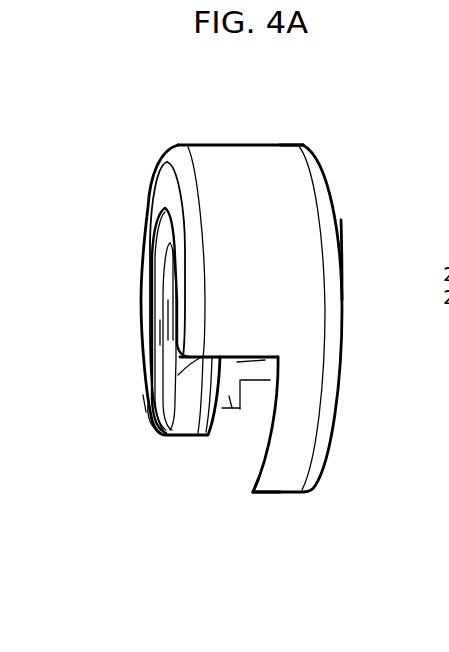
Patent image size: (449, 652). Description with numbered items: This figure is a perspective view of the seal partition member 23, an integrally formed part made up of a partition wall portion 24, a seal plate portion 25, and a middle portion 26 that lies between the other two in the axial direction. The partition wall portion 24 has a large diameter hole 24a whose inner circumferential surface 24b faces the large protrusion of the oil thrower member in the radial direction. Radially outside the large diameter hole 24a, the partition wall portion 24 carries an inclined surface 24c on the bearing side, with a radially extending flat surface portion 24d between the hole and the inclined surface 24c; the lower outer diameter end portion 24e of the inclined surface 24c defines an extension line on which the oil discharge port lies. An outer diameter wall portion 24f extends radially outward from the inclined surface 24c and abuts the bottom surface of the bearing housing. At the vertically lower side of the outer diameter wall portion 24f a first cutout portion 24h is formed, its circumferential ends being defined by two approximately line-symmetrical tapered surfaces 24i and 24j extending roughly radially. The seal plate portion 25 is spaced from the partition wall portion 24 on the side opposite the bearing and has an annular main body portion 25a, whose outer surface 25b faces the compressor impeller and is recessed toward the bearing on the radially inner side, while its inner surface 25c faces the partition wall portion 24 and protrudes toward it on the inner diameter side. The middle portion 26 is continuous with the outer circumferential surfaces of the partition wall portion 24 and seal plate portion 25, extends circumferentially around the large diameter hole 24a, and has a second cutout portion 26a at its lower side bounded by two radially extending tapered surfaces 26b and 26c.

The seal partition member 23 is at (228, 143).
The partition wall portion 24 is at (192, 143).
The large diameter hole 24a is at (178, 288).
The inner circumferential surface 24b is at (175, 292).
The inclined surface 24c is at (162, 250).
The flat surface portion 24d is at (172, 321).
The outer diameter end portion 24e is at (148, 417).
The outer diameter wall portion 24f is at (170, 193).
The first cutout portion 24h is at (178, 375).
The tapered surface 24i is at (168, 328).
The tapered surface 24j is at (143, 405).
The seal plate portion 25 is at (285, 143).
The main body portion 25a is at (305, 143).
The outer surface 25b is at (342, 235).
The inner surface 25c is at (253, 467).
The middle portion 26 is at (244, 143).
The second cutout portion 26a is at (241, 380).
The tapered surface 26b is at (237, 362).
The tapered surface 26c is at (240, 408).